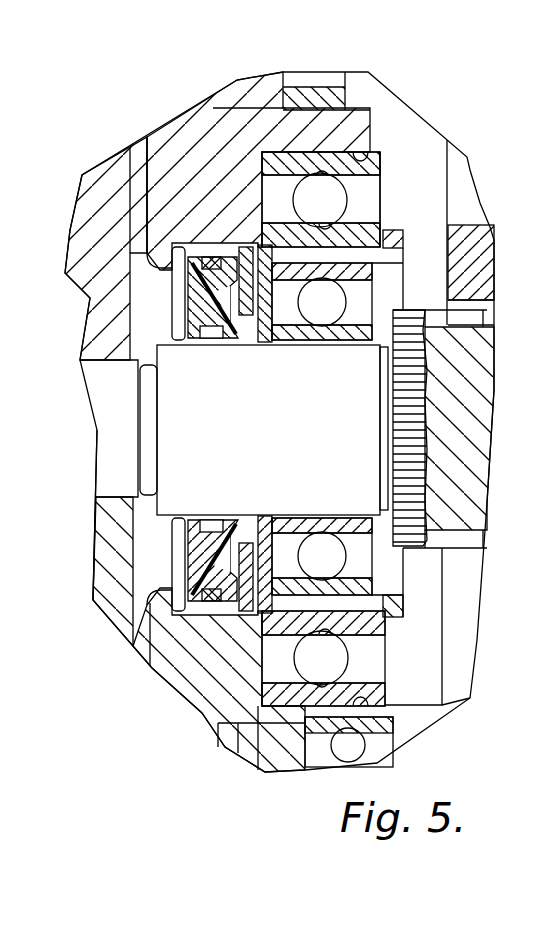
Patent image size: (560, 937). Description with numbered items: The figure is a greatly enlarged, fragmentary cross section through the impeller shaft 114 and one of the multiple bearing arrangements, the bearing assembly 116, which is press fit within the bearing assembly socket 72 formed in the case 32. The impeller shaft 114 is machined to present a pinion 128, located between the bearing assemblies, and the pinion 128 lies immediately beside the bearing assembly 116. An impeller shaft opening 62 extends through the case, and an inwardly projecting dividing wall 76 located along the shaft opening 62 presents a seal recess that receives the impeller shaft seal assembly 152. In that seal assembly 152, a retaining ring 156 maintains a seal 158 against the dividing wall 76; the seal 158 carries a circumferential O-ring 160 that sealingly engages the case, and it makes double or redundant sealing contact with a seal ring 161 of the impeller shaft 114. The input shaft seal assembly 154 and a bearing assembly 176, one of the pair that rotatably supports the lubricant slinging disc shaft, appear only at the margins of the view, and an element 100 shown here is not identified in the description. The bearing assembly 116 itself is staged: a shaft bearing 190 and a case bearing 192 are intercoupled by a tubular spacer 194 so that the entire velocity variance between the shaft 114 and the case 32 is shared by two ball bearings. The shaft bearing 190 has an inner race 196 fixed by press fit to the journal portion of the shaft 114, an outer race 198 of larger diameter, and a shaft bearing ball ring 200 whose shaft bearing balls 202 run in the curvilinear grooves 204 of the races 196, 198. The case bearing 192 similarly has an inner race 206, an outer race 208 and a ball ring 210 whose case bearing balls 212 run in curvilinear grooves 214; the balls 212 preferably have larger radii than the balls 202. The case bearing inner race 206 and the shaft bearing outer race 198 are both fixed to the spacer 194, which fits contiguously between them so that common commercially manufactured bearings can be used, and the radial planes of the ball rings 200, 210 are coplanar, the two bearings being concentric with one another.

The case 32 is at (0, 486).
The impeller shaft opening 62 is at (62, 267).
The bearing assembly socket 72 is at (374, 186).
The dividing wall 76 is at (263, 622).
The motor assembly 100 is at (0, 655).
The impeller shaft 114 is at (103, 402).
The bearing assembly 116 is at (232, 162).
The pinion 128 is at (410, 372).
The impeller shaft seal assembly 152 is at (162, 628).
The input shaft seal assembly 154 is at (78, 420).
The retaining ring 156 is at (203, 304).
The seal 158 is at (207, 557).
The O-ring 160 is at (140, 268).
The seal ring 161 is at (173, 520).
The bearing assembly 176 is at (382, 747).
The shaft bearing 190 is at (385, 293).
The case bearing 192 is at (392, 195).
The spacer 194 is at (395, 250).
The inner race 196 is at (330, 345).
The outer race 198 is at (290, 300).
The shaft bearing ball ring 200 is at (280, 308).
The shaft bearing balls 202 is at (333, 312).
The curvilinear groove 204 is at (293, 275).
The inner race 206 is at (140, 235).
The outer race 208 is at (270, 157).
The case bearing ball ring 210 is at (372, 185).
The case bearing balls 212 is at (318, 173).
The curvilinear grooves 214 is at (326, 172).